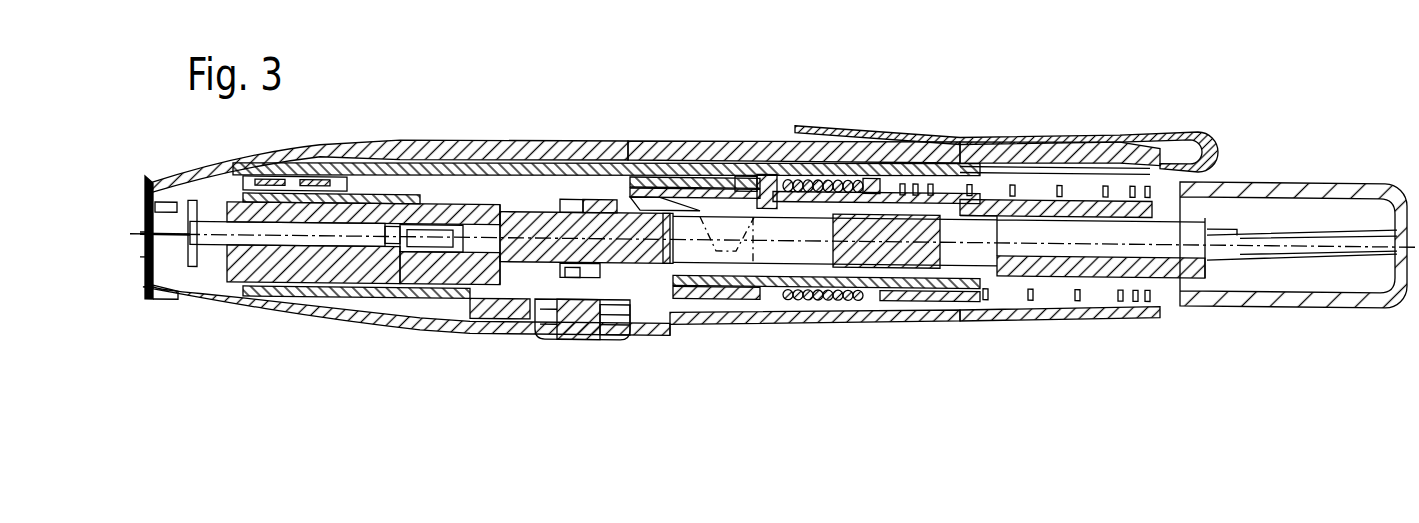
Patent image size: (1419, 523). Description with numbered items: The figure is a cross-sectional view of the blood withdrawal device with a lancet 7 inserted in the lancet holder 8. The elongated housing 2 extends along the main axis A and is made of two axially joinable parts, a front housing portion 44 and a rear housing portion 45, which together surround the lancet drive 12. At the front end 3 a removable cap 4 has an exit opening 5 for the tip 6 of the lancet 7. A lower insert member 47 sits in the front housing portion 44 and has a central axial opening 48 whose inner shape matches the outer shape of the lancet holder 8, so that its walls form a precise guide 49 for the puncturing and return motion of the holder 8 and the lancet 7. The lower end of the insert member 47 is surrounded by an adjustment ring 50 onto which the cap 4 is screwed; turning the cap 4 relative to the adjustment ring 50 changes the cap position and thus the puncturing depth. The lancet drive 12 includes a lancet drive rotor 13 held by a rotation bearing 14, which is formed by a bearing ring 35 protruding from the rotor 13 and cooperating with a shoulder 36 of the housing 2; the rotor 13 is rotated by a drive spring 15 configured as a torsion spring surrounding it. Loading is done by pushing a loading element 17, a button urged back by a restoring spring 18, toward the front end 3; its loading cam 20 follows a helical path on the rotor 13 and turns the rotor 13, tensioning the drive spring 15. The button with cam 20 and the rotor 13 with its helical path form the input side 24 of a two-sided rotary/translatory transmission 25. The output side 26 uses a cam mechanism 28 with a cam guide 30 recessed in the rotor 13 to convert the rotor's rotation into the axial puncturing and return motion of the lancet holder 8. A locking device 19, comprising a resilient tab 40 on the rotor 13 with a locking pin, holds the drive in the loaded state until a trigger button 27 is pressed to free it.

The housing 2 is at (651, 143).
The front end 3 is at (150, 186).
The removable cap 4 is at (215, 312).
The exit opening 5 is at (137, 242).
The tip 6 is at (170, 300).
The lancet 7 is at (335, 300).
The lancet holder 8 is at (460, 300).
The lancet drive 12 is at (810, 306).
The lancet drive rotor 13 is at (1057, 302).
The rotation bearing 14 is at (762, 175).
The drive spring 15 is at (838, 323).
The loading element 17 is at (1258, 183).
The restoring spring 18 is at (988, 302).
The locking device 19 is at (577, 350).
The loading cam 20 is at (1263, 232).
The input side 24 is at (1091, 180).
The rotary/translatory transmission 25 is at (944, 182).
The output side 26 is at (700, 317).
The trigger button 27 is at (588, 330).
The cam mechanism 28 is at (710, 188).
The cam guide 30 is at (750, 302).
The bearing ring 35 is at (796, 126).
The shoulder 36 is at (738, 180).
The resilient tab 40 is at (560, 318).
The front housing portion 44 is at (566, 175).
The rear housing portion 45 is at (1005, 152).
The lower insert member 47 is at (327, 205).
The central axial opening 48 is at (237, 197).
The guide 49 is at (262, 312).
The adjustment ring 50 is at (400, 302).
The main axis A is at (515, 205).